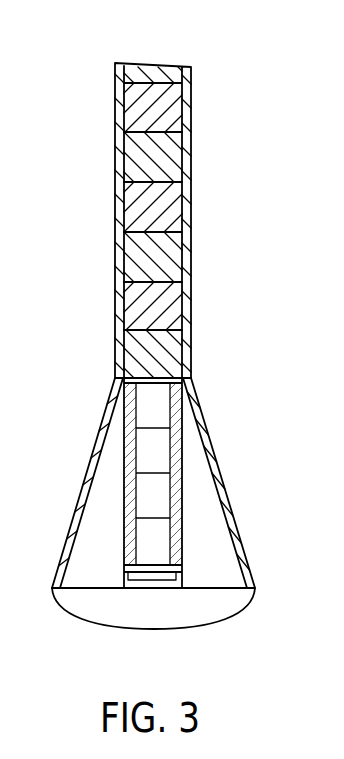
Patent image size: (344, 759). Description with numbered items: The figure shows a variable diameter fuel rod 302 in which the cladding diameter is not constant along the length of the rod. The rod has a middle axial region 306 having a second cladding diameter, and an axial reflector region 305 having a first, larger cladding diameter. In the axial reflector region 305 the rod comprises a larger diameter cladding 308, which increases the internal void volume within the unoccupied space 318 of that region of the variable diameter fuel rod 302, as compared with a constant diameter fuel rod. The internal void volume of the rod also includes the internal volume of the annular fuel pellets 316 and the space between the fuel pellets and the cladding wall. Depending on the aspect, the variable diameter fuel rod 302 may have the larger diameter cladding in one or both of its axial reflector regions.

The variable diameter fuel rod 302 is at (230, 84).
The axial reflector region 305 is at (260, 380).
The middle axial region 306 is at (102, 70).
The larger diameter cladding 308 is at (188, 208).
The annular fuel pellets 316 is at (152, 411).
The unoccupied space 318 is at (90, 563).